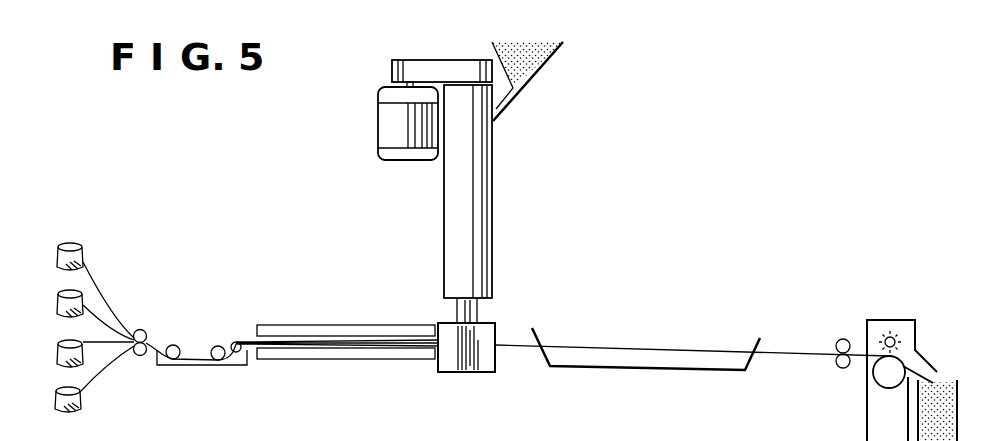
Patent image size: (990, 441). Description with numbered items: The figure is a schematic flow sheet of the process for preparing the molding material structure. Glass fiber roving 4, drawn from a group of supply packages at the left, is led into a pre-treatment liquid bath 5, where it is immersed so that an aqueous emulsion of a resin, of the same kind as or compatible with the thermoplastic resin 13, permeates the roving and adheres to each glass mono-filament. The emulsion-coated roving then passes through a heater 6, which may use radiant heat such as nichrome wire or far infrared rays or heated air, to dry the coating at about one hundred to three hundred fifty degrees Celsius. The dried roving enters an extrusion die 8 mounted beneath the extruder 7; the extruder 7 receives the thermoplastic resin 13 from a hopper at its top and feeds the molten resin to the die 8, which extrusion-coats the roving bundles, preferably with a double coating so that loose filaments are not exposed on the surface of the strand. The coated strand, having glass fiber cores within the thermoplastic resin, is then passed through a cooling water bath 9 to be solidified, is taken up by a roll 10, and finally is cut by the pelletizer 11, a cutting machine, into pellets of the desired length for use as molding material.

The glass fiber roving 4 is at (62, 317).
The pre-treatment liquid bath 5 is at (202, 350).
The heater 6 is at (346, 325).
The extruder 7 is at (492, 203).
The extrusion die 8 is at (471, 372).
The cooling water bath 9 is at (659, 370).
The roll 10 is at (843, 339).
The pelletizer 11 is at (867, 415).
The thermoplastic resin 13 is at (522, 46).